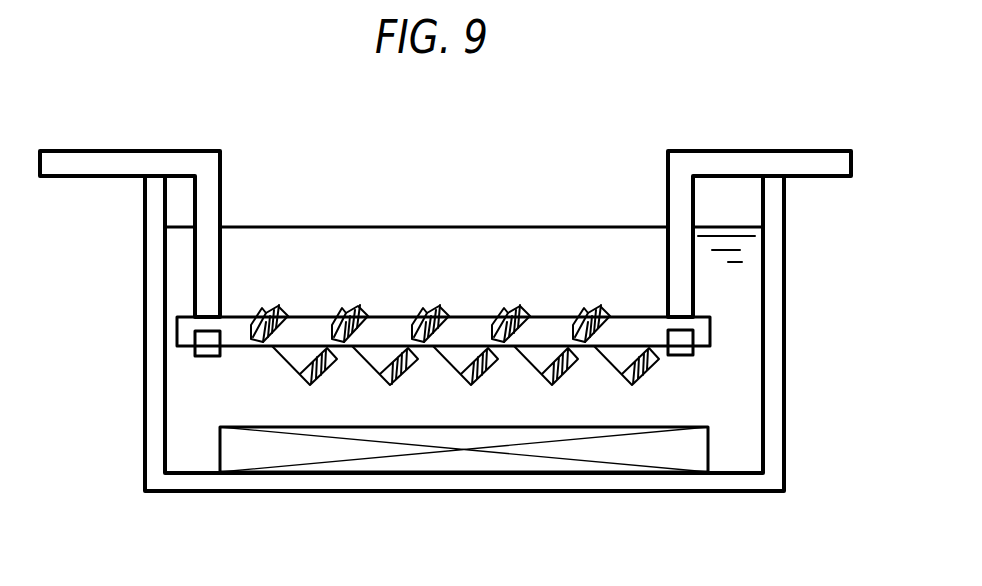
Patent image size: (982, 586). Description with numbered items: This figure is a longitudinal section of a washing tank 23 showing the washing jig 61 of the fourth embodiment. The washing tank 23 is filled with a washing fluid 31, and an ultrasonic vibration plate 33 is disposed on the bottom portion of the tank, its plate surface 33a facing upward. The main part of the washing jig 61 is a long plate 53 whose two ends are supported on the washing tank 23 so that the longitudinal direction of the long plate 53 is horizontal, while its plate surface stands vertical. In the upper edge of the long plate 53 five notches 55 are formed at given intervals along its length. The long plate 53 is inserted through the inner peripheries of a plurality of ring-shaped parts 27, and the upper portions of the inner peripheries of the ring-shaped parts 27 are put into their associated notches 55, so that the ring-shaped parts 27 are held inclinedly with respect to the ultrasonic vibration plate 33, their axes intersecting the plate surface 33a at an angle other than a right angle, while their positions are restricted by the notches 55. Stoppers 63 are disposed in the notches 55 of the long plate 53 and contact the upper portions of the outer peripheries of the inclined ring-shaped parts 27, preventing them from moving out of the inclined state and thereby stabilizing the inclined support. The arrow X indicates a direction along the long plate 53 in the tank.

The washing jig 61 is at (770, 112).
The long plate 53 is at (234, 318).
The stopper 63 is at (338, 315).
The notch 55 is at (342, 315).
The ring-shaped part 27 is at (368, 298).
The washing fluid 31 is at (750, 242).
The washing tank 23 is at (773, 283).
The ultrasonic vibration plate 33 is at (730, 440).
The plate surface 33a is at (593, 426).
The direction X is at (735, 332).